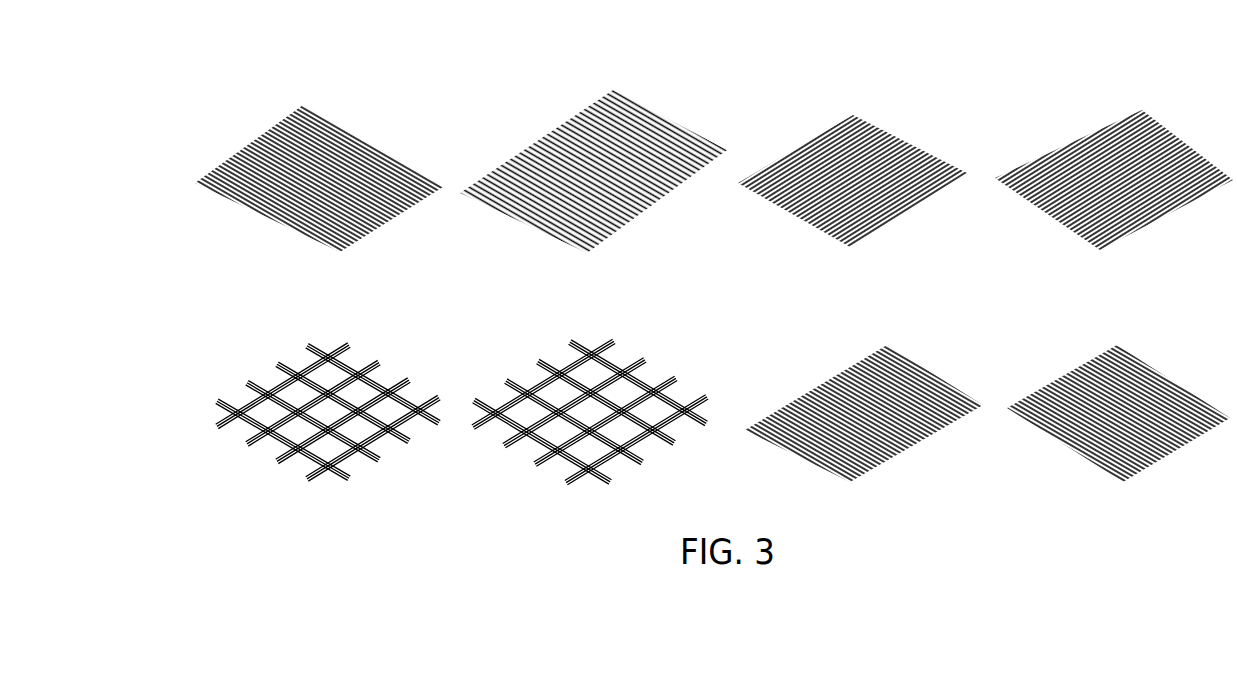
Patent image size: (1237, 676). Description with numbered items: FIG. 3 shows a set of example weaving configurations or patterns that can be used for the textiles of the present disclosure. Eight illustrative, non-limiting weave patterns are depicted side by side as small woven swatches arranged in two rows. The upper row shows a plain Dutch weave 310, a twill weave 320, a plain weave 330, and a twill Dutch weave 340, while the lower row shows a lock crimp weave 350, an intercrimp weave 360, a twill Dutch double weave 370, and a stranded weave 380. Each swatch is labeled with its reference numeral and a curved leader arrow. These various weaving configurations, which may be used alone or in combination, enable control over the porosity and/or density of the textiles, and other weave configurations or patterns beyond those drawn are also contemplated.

The plain Dutch weave 310 is at (298, 151).
The twill weave 320 is at (578, 152).
The plain weave 330 is at (837, 149).
The twill Dutch weave 340 is at (1114, 150).
The lock crimp weave 350 is at (298, 391).
The intercrimp weave 360 is at (561, 390).
The twill Dutch double weave 370 is at (844, 389).
The stranded weave 380 is at (1099, 386).